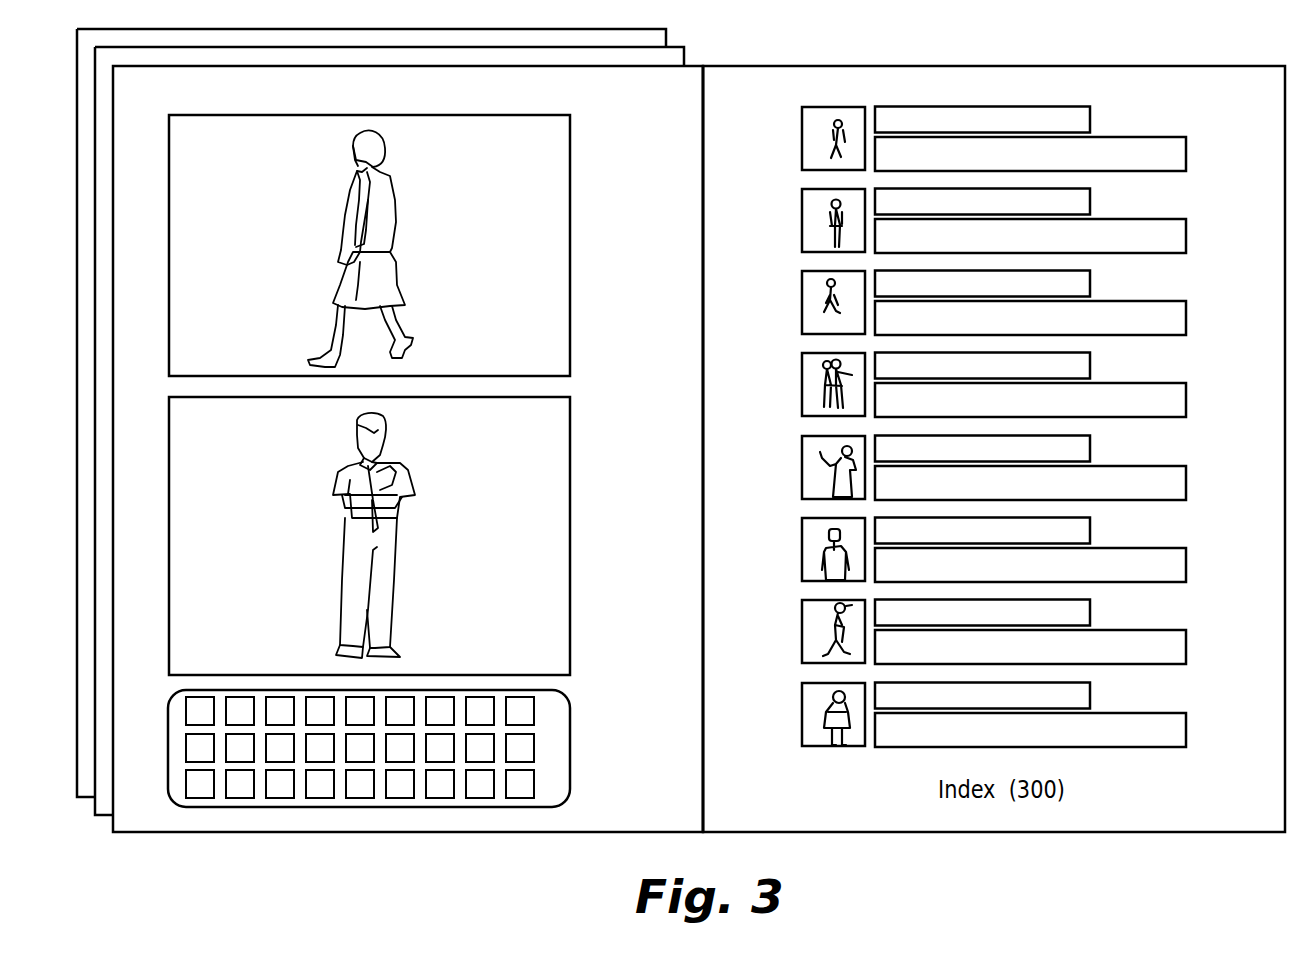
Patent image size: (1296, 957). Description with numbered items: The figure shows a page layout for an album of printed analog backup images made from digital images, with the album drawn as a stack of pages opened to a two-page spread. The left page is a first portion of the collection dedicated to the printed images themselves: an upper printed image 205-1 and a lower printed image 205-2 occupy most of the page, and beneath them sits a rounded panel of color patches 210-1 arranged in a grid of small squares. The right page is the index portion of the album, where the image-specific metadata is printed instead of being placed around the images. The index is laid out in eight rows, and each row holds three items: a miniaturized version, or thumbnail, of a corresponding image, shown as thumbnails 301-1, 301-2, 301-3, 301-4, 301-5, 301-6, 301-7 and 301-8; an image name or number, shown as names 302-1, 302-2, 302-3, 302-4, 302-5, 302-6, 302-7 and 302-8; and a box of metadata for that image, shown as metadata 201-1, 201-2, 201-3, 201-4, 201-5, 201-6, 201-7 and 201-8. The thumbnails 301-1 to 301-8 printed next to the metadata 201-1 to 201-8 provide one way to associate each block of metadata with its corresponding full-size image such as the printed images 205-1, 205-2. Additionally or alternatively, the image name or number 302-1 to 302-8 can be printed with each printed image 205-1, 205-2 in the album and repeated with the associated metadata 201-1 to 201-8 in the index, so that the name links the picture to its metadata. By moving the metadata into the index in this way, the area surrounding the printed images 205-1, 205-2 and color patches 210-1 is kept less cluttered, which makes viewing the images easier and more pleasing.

The printed image 205-1 is at (570, 196).
The printed image 205-2 is at (570, 527).
The color patches 210-1 is at (570, 750).
The miniaturized version 301-1 is at (803, 137).
The miniaturized version 301-2 is at (803, 219).
The miniaturized version 301-3 is at (803, 301).
The miniaturized version 301-4 is at (803, 383).
The miniaturized version 301-5 is at (803, 466).
The miniaturized version 301-6 is at (803, 548).
The miniaturized version 301-7 is at (803, 630).
The miniaturized version 301-8 is at (803, 713).
The image name or number 302-1 is at (1090, 118).
The image name or number 302-2 is at (1090, 200).
The image name or number 302-3 is at (1090, 282).
The image name or number 302-4 is at (1090, 364).
The image name or number 302-5 is at (1090, 447).
The image name or number 302-6 is at (1090, 529).
The image name or number 302-7 is at (1090, 611).
The image name or number 302-8 is at (1090, 694).
The image-specific metadata 201-1 is at (1186, 155).
The image-specific metadata 201-2 is at (1186, 237).
The image-specific metadata 201-3 is at (1186, 319).
The image-specific metadata 201-4 is at (1186, 401).
The image-specific metadata 201-5 is at (1186, 484).
The image-specific metadata 201-6 is at (1186, 566).
The image-specific metadata 201-7 is at (1186, 648).
The image-specific metadata 201-8 is at (1186, 731).